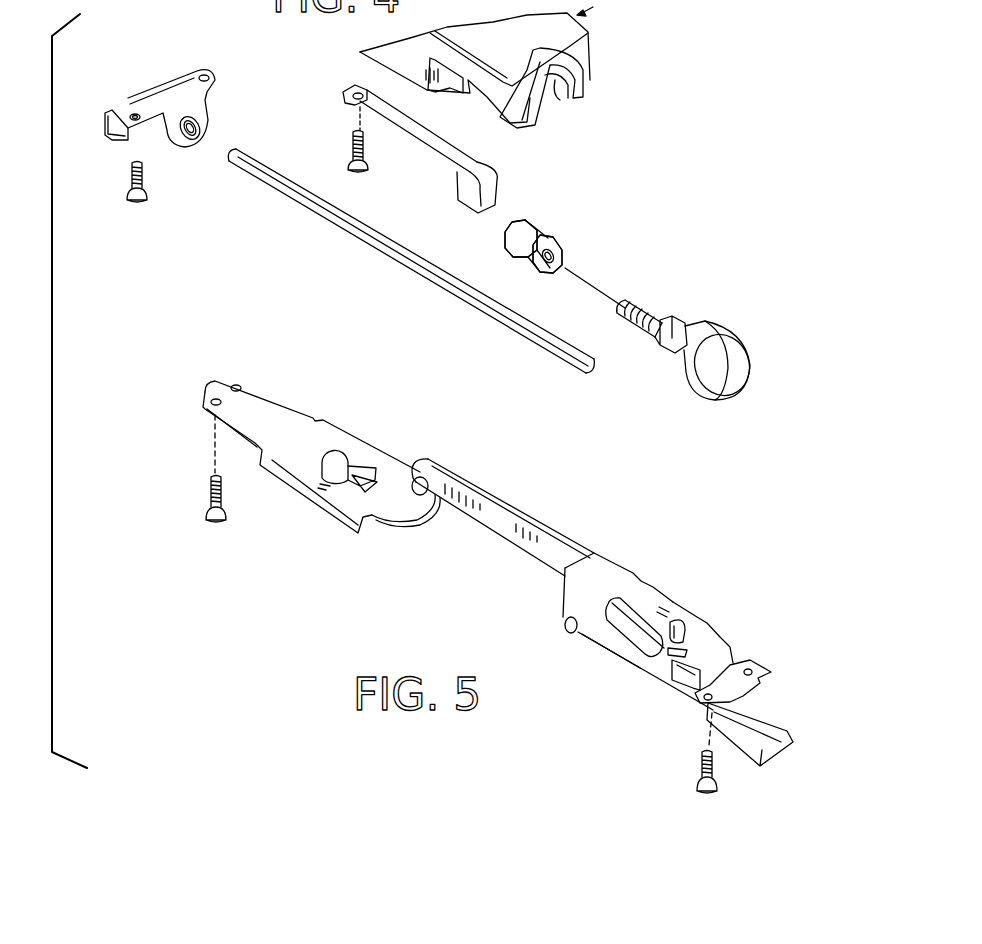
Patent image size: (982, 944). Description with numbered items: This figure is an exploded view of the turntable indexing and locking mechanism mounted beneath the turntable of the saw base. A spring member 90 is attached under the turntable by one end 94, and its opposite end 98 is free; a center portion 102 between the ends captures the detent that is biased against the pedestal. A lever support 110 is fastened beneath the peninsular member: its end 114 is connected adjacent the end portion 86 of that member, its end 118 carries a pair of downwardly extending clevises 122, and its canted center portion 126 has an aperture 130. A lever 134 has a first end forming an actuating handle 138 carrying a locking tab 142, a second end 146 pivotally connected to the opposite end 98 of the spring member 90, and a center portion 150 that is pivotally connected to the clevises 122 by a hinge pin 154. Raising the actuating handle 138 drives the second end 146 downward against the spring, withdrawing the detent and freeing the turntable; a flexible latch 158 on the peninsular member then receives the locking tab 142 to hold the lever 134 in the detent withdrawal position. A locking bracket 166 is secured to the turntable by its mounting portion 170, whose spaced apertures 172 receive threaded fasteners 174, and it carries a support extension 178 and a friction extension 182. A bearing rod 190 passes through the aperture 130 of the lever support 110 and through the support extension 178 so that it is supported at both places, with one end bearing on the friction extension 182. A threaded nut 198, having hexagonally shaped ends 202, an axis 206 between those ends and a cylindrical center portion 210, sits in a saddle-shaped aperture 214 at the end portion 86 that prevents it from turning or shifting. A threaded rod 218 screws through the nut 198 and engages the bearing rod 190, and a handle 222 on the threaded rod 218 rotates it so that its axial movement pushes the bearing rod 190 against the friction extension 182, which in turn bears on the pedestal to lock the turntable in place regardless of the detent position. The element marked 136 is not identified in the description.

In FIG. 4, the locking bracket 166 is at (158, 65).
In FIG. 4, the mounting portion 170 is at (170, 83).
In FIG. 4, the spaced apertures 172 is at (217, 80).
In FIG. 4, the support extension 178 is at (103, 127).
In FIG. 4, the friction extension 182 is at (207, 120).
In FIG. 4, the pivot opening 136 is at (183, 147).
In FIG. 4, the threaded fasteners 174 is at (137, 202).
In FIG. 4, the end portion 86 is at (592, 33).
In FIG. 4, the aperture 214 is at (568, 97).
In FIG. 4, the flexible latch 158 is at (423, 160).
In FIG. 4, the bearing rod 190 is at (352, 237).
In FIG. 4, the threaded nut 198 is at (573, 213).
In FIG. 4, the hexagonally shaped ends 202 is at (530, 218).
In FIG. 4, the cylindrical center portion 210 is at (527, 262).
In FIG. 4, the axis 206 is at (580, 273).
In FIG. 4, the threaded rod 218 is at (653, 310).
In FIG. 4, the handle 222 is at (750, 372).
In FIG. 5, the one end 94 is at (238, 378).
In FIG. 5, the spring member 90 is at (337, 432).
In FIG. 5, the center portion 102 is at (363, 450).
In FIG. 5, the opposite end 98 is at (417, 520).
In FIG. 5, the second end 146 is at (433, 457).
In FIG. 5, the lever 134 is at (510, 500).
In FIG. 5, the end 118 is at (593, 553).
In FIG. 5, the clevises 122 is at (563, 605).
In FIG. 5, the hinge pin 154 is at (567, 632).
In FIG. 5, the center portion 150 is at (593, 647).
In FIG. 5, the lever support 110 is at (683, 597).
In FIG. 5, the canted center portion 126 is at (693, 625).
In FIG. 5, the aperture 130 is at (692, 646).
In FIG. 5, the end 114 is at (772, 673).
In FIG. 5, the locking tab 142 is at (693, 685).
In FIG. 5, the actuating handle 138 is at (792, 742).